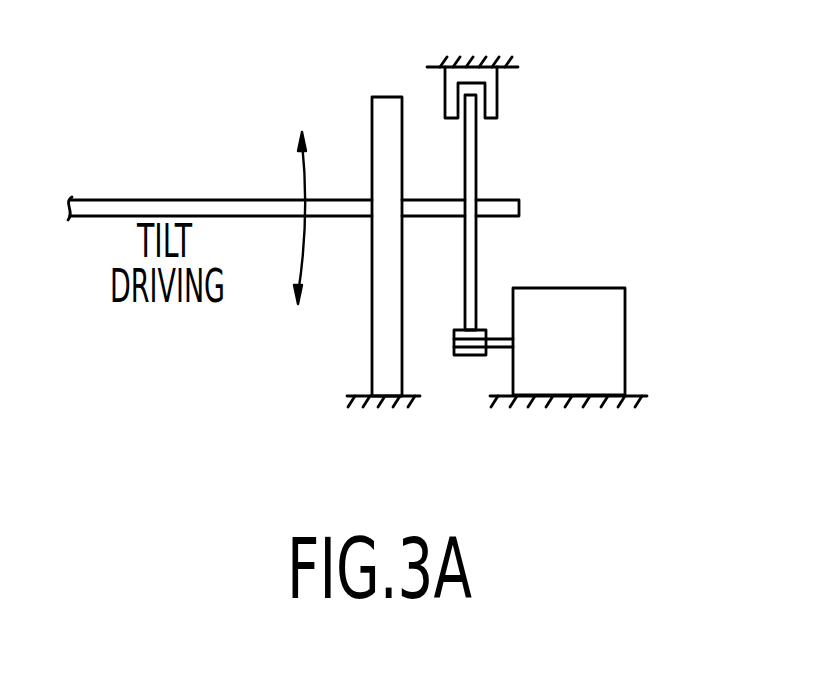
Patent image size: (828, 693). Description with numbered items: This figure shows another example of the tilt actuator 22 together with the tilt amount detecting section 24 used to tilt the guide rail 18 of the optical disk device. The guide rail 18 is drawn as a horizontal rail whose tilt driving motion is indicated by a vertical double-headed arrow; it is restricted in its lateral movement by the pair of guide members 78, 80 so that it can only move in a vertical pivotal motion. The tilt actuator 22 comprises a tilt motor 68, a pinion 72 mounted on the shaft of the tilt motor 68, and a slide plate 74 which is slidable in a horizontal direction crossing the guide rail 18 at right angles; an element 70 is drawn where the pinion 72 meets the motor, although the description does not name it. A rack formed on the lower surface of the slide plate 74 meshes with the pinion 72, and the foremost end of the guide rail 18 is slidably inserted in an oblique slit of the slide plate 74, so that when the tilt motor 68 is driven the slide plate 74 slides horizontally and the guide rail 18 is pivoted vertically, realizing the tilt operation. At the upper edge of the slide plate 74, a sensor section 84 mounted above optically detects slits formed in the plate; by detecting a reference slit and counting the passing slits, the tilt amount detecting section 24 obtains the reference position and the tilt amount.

The guide rail 18 is at (140, 200).
The tilt actuator 22 is at (586, 408).
The tilt amount detecting section 24 is at (600, 212).
The tilt motor 68 is at (625, 322).
The motor output shaft 70 is at (497, 338).
The pinion 72 is at (460, 356).
The slide plate 74 is at (476, 160).
The guide member 78 is at (336, 203).
The guide member 80 is at (372, 97).
The sensor section 84 is at (497, 95).